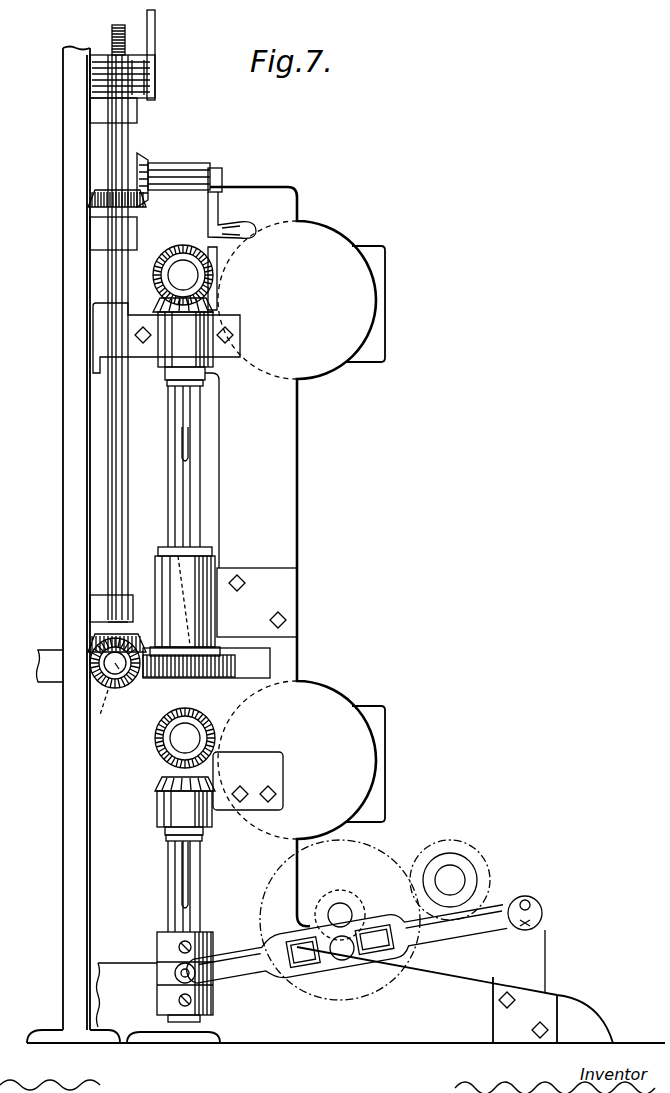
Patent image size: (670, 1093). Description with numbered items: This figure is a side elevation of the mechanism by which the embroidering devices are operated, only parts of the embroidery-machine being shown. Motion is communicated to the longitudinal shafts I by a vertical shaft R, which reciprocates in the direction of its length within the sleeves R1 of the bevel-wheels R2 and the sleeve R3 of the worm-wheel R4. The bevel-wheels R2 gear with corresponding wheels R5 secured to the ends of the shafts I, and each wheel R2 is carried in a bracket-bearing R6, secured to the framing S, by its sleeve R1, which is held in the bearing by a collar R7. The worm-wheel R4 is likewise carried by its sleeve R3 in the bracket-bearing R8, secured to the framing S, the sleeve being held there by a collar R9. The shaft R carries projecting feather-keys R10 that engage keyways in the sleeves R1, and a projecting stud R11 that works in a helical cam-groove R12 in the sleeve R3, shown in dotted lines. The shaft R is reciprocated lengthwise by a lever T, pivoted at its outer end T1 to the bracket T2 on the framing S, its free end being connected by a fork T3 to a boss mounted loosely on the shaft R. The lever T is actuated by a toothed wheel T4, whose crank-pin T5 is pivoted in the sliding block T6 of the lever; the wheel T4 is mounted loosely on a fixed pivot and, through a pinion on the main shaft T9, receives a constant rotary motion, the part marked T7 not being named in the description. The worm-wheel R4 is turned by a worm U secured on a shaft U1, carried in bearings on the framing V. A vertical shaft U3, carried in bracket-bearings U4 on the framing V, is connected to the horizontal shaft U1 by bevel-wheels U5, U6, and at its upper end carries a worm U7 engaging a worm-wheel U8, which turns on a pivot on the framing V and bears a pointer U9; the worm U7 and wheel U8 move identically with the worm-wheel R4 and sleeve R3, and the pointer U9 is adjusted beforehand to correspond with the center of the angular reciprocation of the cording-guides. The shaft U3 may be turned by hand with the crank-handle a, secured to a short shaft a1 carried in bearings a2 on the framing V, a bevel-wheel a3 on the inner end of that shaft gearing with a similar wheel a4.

The framing V is at (76, 539).
The vertical shaft U3 is at (148, 494).
The worm-wheel U8 is at (100, 36).
The pointer U9 is at (156, 35).
The worm U7 is at (109, 76).
The bracket-bearings U4 is at (113, 360).
The bevel-wheel a3 is at (152, 167).
The bearings a2 is at (179, 162).
The short shaft a1 is at (222, 178).
The crank-handle a is at (218, 213).
The bevel-wheel a4 is at (147, 205).
The framing S is at (353, 615).
The bevel-wheels R5 is at (182, 252).
The longitudinal shafts I is at (142, 747).
The bevel-wheels R2 is at (214, 306).
The bracket-bearing R6 is at (213, 352).
The collar R7 is at (208, 372).
The sleeve R1 is at (170, 384).
The vertical shaft R is at (190, 492).
The feather-keys R10 is at (184, 436).
The collar R9 is at (162, 560).
The sleeve R3 is at (205, 554).
The bracket-bearing R8 is at (165, 596).
The helical cam-groove R12 is at (188, 594).
The projecting stud R11 is at (214, 644).
The worm-wheel R4 is at (166, 680).
The bevel-wheel U6 is at (94, 648).
The bevel-wheel U5 is at (92, 664).
The shaft U1 is at (96, 690).
The worm U is at (114, 678).
The fork T3 is at (213, 985).
The lever T is at (346, 957).
The crank-pin T5 is at (340, 960).
The sliding block T6 is at (338, 956).
The pin T7 is at (346, 910).
The toothed wheel T4 is at (340, 920).
The main shaft T9 is at (455, 880).
The outer end T1 is at (540, 914).
The bracket T2 is at (526, 961).